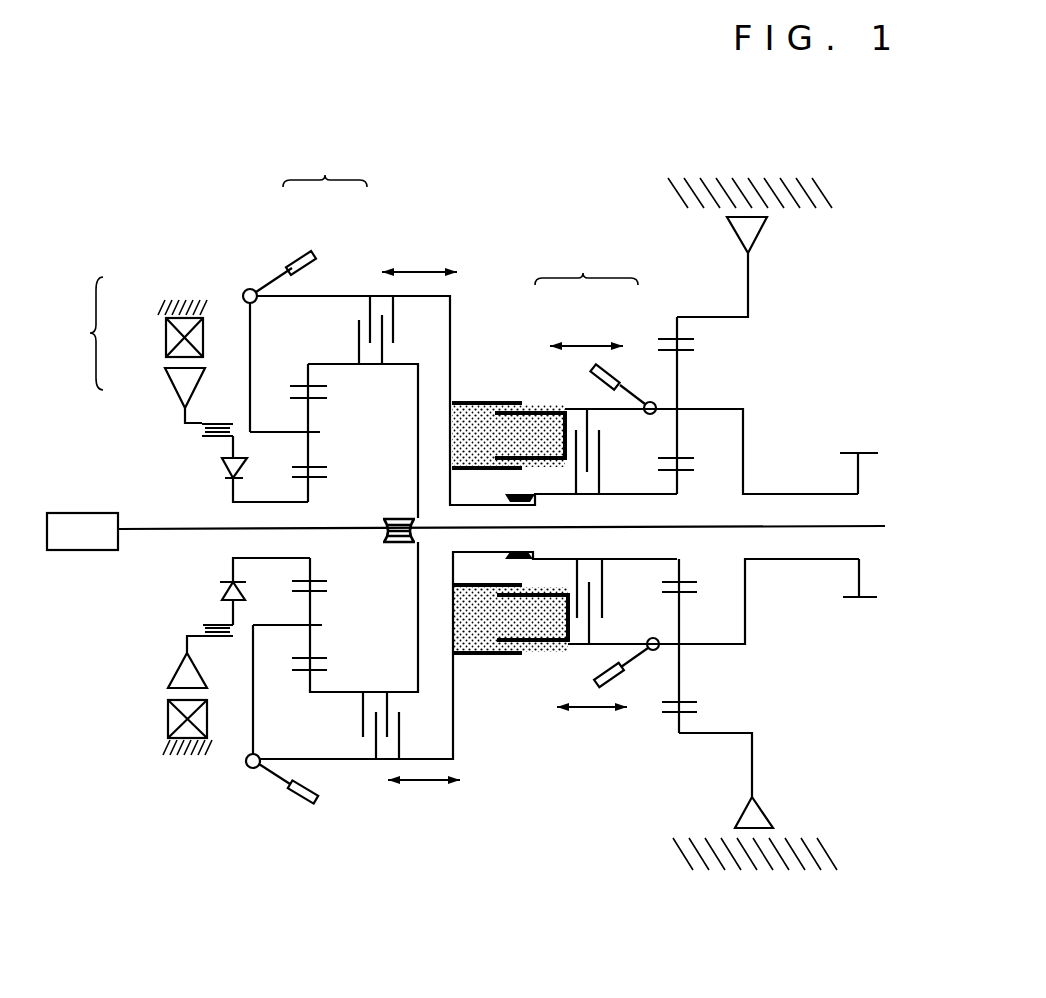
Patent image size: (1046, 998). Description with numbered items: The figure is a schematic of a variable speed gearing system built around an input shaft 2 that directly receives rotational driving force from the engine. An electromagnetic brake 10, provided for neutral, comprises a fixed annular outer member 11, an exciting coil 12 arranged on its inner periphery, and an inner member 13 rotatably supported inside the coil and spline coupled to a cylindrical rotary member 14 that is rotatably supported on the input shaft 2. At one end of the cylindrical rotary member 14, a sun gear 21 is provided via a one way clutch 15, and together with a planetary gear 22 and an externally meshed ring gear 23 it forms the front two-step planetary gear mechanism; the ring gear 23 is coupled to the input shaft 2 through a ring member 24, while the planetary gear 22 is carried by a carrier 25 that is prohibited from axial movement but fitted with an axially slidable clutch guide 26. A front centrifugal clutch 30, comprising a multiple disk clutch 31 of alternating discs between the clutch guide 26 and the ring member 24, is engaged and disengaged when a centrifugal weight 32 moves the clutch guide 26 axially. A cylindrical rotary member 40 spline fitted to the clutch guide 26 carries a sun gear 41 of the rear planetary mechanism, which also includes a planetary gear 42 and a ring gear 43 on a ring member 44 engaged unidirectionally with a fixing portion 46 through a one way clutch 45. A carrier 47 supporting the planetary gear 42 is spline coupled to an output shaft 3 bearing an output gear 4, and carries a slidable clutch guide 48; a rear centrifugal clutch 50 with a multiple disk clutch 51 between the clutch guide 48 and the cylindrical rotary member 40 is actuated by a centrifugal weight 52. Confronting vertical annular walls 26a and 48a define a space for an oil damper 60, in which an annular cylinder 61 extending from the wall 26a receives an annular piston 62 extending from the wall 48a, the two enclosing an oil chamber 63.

The input shaft 2 is at (143, 528).
The output shaft 3 is at (790, 493).
The output gear 4 is at (858, 470).
The electromagnetic brake 10 is at (134, 516).
The fixed annular outer member 11 is at (160, 309).
The exciting coil 12 is at (165, 338).
The inner member 13 is at (165, 386).
The cylindrical rotary member 14 is at (213, 438).
The one way clutch 15 is at (246, 465).
The sun gear 21 is at (312, 483).
The planetary gear 22 is at (311, 452).
The ring gear 23 is at (313, 376).
The ring member 24 is at (417, 447).
The carrier 25 is at (252, 362).
The clutch guide 26 is at (376, 296).
The vertical annular wall 26a is at (455, 730).
The front centrifugal clutch 30 is at (321, 477).
The multiple disk clutch 31 is at (352, 318).
The centrifugal weight 32 is at (300, 250).
The cylindrical rotary member 40 is at (630, 494).
The sun gear 41 is at (680, 483).
The planetary gear 42 is at (680, 380).
The ring gear 43 is at (682, 330).
The ring member 44 is at (750, 300).
The one way clutch 45 is at (756, 238).
The fixing portion 46 is at (806, 180).
The carrier 47 is at (745, 435).
The clutch guide 48 is at (622, 412).
The vertical annular wall 48a is at (572, 622).
The rear centrifugal clutch 50 is at (548, 357).
The multiple disk clutch 51 is at (566, 407).
The centrifugal weight 52 is at (612, 368).
The oil damper 60 is at (510, 672).
The annular cylinder 61 is at (473, 655).
The annular piston 62 is at (532, 645).
The oil chamber 63 is at (503, 615).